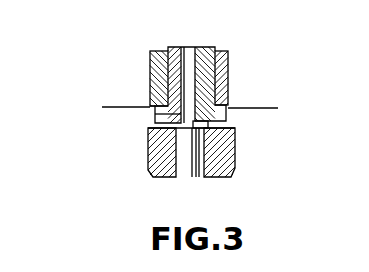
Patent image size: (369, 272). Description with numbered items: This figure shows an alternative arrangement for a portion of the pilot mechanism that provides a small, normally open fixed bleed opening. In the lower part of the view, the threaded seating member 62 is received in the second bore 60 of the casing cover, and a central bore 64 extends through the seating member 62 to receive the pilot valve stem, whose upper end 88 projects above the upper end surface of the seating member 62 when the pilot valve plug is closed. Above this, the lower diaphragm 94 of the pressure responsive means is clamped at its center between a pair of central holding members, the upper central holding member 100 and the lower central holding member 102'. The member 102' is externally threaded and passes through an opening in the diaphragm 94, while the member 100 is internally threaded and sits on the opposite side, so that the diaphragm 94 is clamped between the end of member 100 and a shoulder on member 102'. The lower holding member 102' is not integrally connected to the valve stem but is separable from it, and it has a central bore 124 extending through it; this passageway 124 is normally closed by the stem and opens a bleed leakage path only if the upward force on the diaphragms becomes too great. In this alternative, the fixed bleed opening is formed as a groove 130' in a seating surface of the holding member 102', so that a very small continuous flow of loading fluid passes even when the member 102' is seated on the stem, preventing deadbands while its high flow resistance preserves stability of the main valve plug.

The upper central holding member 100 is at (228, 68).
The lower central holding member 102' is at (239, 87).
The lower pressure responsive diaphragm 94 is at (278, 108).
The central bore 124 is at (150, 118).
The upper end of the valve stem 88 is at (148, 138).
The groove 130' is at (220, 162).
The threaded seating member 62 is at (233, 155).
The central bore 64 is at (163, 179).
The second bore 60 is at (190, 178).